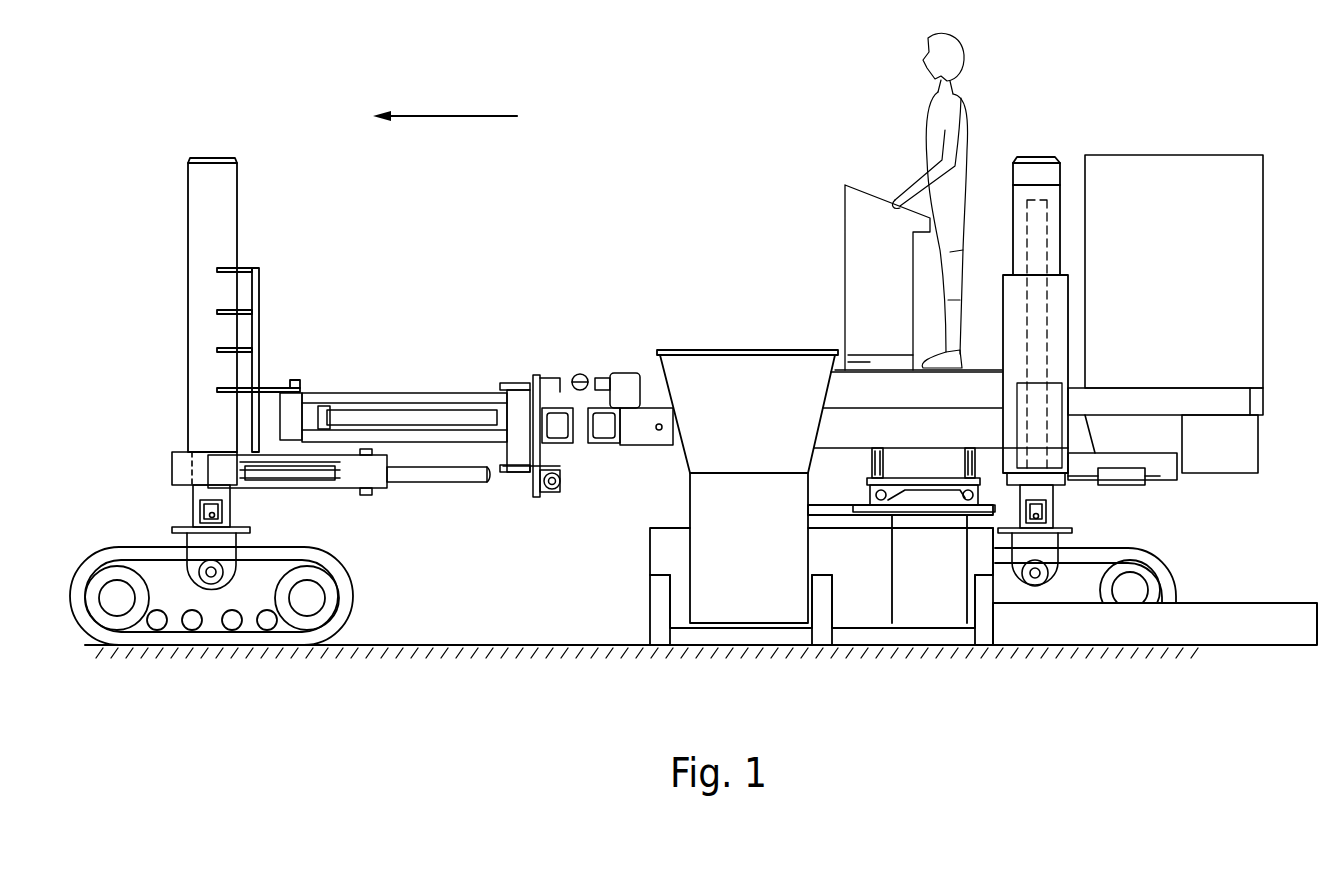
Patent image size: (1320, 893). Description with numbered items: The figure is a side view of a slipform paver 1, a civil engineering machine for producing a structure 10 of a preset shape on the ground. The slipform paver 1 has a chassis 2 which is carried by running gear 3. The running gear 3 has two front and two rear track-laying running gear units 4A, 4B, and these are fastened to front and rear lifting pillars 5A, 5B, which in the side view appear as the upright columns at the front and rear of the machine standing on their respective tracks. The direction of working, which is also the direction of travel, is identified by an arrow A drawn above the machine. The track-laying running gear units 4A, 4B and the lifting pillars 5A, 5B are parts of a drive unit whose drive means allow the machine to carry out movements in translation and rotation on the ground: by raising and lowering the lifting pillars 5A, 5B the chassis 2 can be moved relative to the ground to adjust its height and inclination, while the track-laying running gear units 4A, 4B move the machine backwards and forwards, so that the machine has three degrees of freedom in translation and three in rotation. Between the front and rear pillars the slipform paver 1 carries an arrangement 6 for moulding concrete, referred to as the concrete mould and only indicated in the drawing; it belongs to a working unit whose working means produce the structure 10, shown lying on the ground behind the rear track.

The slipform paver 1 is at (669, 171).
The chassis 2 is at (981, 360).
The running gear 3 is at (118, 516).
The front track-laying running gear unit 4A is at (355, 597).
The rear track-laying running gear unit 4B is at (1170, 598).
The front lifting pillar 5A is at (188, 248).
The rear lifting pillar 5B is at (1060, 205).
The arrangement for moulding concrete 6 is at (747, 380).
The structure 10 is at (1283, 636).
The arrow A is at (447, 116).